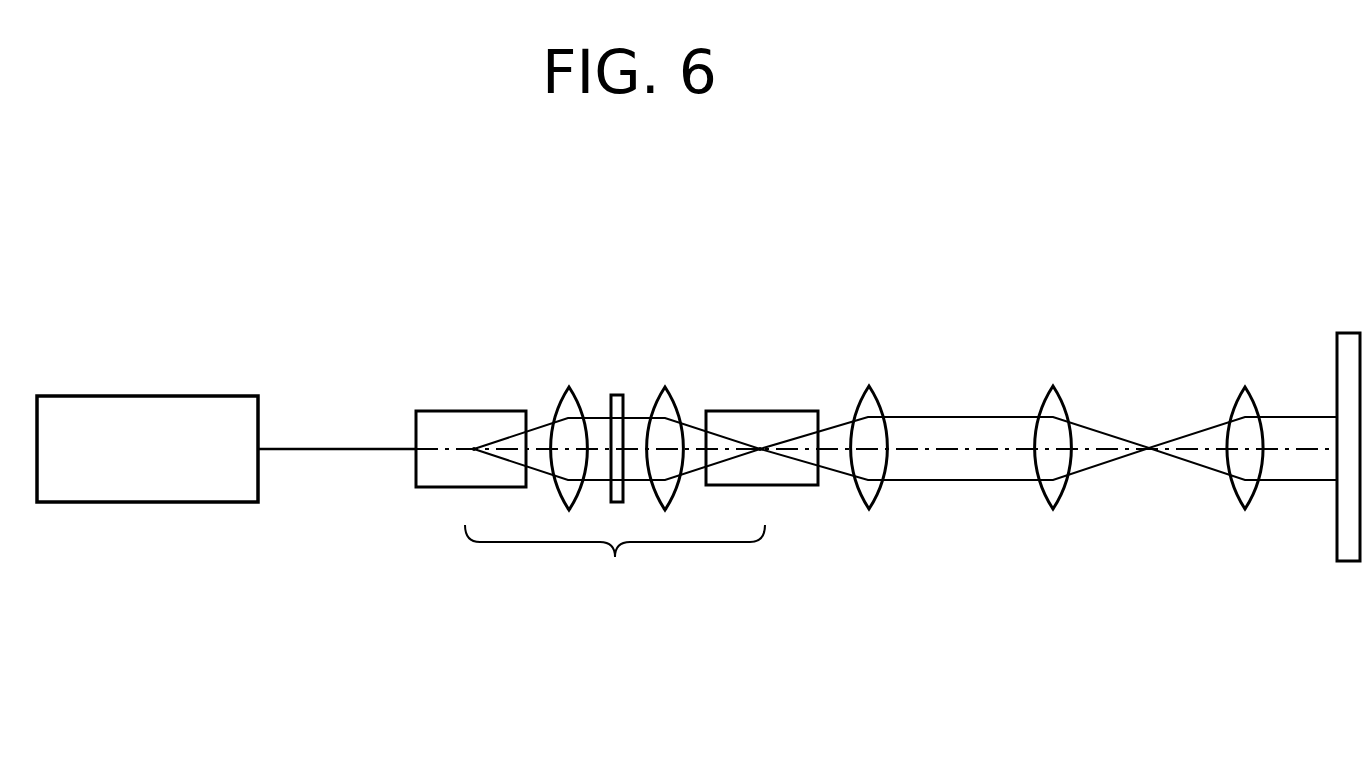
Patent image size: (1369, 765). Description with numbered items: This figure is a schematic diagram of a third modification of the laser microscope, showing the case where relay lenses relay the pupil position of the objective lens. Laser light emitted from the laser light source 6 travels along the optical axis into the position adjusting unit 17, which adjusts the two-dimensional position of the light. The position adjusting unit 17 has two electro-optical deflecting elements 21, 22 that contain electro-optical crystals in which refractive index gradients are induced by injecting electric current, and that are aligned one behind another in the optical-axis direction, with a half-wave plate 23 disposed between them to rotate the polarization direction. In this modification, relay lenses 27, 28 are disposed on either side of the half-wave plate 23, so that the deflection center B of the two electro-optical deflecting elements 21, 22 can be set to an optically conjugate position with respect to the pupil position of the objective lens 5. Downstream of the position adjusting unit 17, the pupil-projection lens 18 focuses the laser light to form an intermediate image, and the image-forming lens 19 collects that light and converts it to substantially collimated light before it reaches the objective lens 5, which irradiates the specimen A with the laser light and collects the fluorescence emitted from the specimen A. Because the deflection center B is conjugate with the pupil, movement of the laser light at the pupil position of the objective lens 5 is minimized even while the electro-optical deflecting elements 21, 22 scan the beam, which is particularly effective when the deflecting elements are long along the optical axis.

The observation laser light source 6 is at (132, 503).
The electro-optical deflecting element 21 is at (455, 412).
The relay lens 27 is at (569, 387).
The half-wave plate 23 is at (616, 395).
The relay lens 28 is at (663, 387).
The electro-optical deflecting element 22 is at (757, 411).
The deflection center B is at (474, 449).
The position adjusting unit 17 is at (615, 566).
The pupil-projection lens 18 is at (872, 509).
The image-forming lens 19 is at (1055, 509).
The objective lens 5 is at (1245, 509).
The specimen A is at (1350, 562).